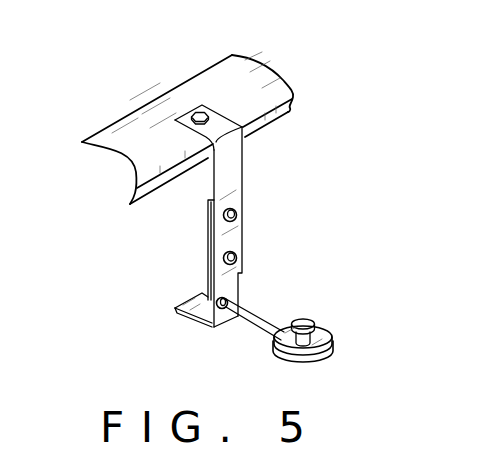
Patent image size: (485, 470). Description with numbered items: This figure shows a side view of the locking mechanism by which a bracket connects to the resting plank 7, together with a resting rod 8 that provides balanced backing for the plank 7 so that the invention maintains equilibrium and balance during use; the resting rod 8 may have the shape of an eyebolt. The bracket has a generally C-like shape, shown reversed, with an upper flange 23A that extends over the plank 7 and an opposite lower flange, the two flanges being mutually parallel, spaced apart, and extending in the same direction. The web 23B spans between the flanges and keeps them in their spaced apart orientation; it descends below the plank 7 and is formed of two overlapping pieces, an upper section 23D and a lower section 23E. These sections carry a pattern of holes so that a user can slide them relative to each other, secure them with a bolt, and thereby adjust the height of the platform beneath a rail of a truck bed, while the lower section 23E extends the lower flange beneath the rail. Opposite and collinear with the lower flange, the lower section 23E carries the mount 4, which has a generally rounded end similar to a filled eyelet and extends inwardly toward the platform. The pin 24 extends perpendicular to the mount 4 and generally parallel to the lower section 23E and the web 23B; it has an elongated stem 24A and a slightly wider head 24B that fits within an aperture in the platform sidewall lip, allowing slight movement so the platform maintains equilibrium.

The plank 7 is at (142, 138).
The upper flange 23A is at (217, 127).
The upper section 23D is at (228, 180).
The lower section 23E is at (208, 218).
The web 23B is at (197, 319).
The resting rod 8 is at (253, 324).
The head 24B is at (306, 320).
The pin 24 is at (315, 328).
The elongated stem 24A is at (327, 351).
The mount 4 is at (310, 365).